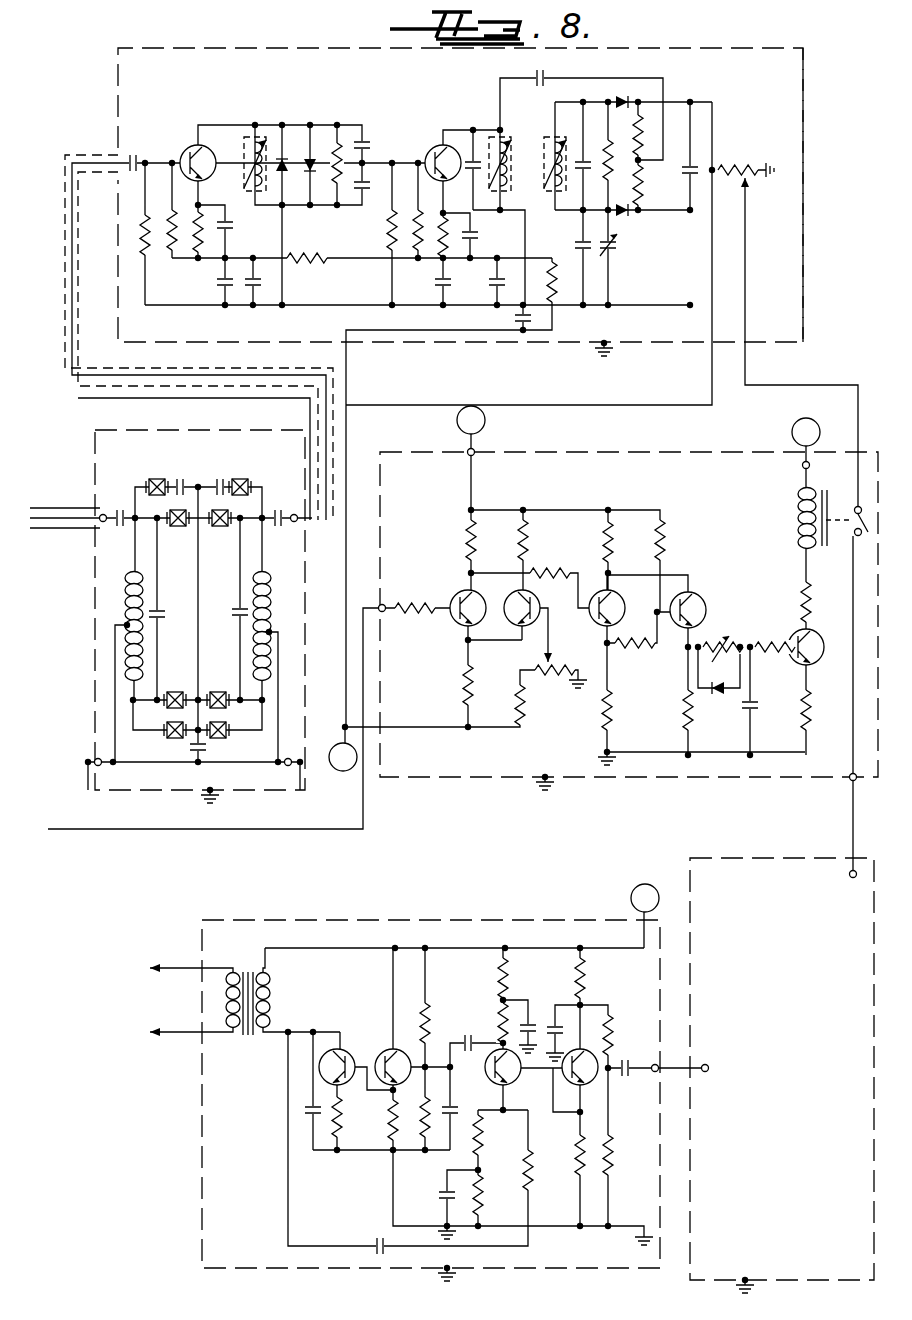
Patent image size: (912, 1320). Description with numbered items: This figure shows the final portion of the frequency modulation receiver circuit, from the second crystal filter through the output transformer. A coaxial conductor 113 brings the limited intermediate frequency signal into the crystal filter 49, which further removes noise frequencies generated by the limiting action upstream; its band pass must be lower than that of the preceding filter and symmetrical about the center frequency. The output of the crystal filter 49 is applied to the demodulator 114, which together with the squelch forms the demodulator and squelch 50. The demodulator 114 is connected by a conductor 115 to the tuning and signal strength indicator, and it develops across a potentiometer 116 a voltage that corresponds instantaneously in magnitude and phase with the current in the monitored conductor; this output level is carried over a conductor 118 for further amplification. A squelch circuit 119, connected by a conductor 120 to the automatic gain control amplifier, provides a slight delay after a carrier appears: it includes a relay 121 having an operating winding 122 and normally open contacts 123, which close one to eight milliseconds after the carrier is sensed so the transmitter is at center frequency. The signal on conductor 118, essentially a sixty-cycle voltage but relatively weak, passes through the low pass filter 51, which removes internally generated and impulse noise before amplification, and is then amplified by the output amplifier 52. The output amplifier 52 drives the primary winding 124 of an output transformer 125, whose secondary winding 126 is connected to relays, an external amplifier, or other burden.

The crystal filter 49 is at (171, 605).
The demodulator and squelch 50 is at (822, 142).
The low pass filter 51 is at (782, 1075).
The output amplifier 52 is at (363, 1082).
The coaxial conductor 113 is at (52, 536).
The demodulator 114 is at (488, 369).
The conductor 115 is at (38, 400).
The potentiometer 116 is at (756, 182).
The conductor 118 is at (799, 342).
The squelch circuit 119 is at (603, 642).
The conductor 120 is at (48, 829).
The relay 121 is at (798, 504).
The operating winding 122 is at (798, 528).
The normally open contacts 123 is at (855, 506).
The primary winding 124 is at (272, 998).
The output transformer 125 is at (246, 1042).
The secondary winding 126 is at (228, 1005).